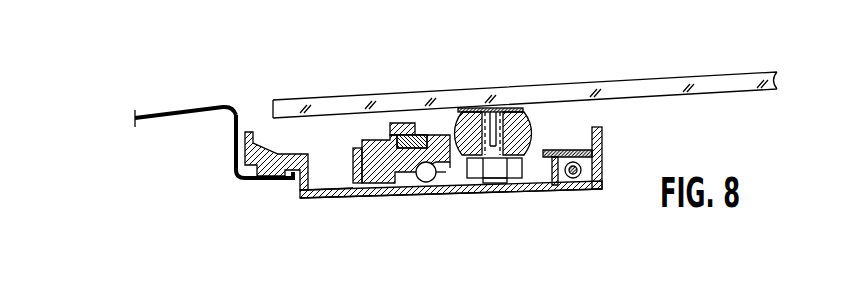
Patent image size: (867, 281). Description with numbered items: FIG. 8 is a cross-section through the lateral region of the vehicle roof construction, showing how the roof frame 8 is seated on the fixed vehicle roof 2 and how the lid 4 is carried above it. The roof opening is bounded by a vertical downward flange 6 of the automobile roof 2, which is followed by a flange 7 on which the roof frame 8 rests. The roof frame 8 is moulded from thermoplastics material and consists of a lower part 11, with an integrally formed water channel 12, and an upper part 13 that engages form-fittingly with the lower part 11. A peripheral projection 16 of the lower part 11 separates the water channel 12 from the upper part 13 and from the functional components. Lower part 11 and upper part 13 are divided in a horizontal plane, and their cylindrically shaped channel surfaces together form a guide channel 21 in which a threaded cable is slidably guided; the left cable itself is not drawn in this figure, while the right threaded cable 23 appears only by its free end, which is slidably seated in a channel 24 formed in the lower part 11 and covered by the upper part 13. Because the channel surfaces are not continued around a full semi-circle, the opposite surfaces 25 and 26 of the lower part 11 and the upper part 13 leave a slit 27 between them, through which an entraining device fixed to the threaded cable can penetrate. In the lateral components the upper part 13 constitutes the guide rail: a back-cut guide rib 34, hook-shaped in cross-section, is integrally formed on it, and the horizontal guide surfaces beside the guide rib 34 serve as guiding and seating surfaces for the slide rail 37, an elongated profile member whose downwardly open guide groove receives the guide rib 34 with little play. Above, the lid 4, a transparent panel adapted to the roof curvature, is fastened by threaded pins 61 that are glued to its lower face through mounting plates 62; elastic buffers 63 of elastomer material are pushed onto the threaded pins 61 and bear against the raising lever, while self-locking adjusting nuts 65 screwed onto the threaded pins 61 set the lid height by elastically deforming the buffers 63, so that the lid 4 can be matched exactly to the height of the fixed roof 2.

The fixed vehicle roof 2 is at (183, 110).
The lid 4 is at (540, 95).
The vertical downward flange 6 is at (233, 131).
The flange 7 is at (266, 172).
The roof frame 8 is at (387, 201).
The lower part 11 is at (358, 191).
The water channel 12 is at (327, 183).
The upper part 13 is at (368, 135).
The peripheral projection 16 is at (355, 152).
The guide channel 21 is at (424, 181).
The right threaded cable 23 is at (591, 186).
The channel 24 is at (565, 177).
The surface 25 is at (452, 168).
The surface 26 is at (478, 178).
The slit 27 is at (441, 178).
The back-cut guide rib 34 is at (413, 126).
The slide rail 37 is at (398, 114).
The threaded pin 61 is at (493, 120).
The mounting plate 62 is at (472, 110).
The buffer 63 is at (523, 127).
The adjusting nut 65 is at (515, 178).